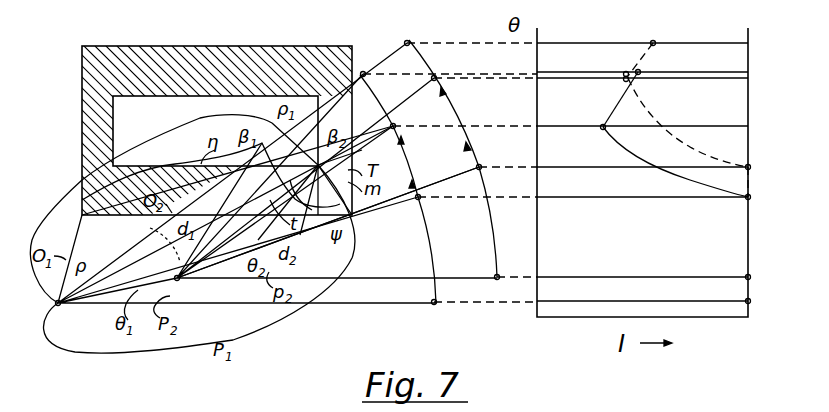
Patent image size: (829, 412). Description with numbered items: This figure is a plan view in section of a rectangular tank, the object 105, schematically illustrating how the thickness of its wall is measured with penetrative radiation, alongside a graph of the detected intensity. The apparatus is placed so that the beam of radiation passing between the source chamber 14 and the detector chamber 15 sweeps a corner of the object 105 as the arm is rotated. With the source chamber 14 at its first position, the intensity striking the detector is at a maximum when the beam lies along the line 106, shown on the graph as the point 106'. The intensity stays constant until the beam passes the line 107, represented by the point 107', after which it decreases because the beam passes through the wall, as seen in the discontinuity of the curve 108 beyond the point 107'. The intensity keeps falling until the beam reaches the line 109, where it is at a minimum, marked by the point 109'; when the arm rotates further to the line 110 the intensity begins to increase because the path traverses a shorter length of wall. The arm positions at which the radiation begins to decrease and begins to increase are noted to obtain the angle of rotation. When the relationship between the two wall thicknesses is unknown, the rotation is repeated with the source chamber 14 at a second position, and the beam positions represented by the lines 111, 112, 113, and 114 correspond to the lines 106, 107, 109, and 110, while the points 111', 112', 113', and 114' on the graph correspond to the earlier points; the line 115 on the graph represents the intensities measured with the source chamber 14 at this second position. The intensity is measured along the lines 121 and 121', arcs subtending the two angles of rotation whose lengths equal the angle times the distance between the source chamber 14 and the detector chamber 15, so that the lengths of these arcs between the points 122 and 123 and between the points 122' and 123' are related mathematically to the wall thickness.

The object 105 is at (86, 129).
The source chamber 14 is at (58, 305).
The line 107 is at (198, 260).
The line 113 is at (390, 100).
The line 121 is at (419, 161).
The detector chamber 15 is at (430, 308).
The line 121' is at (457, 103).
The line 114 is at (388, 32).
The line 110 is at (388, 55).
The point 123' is at (457, 64).
The line 109 is at (415, 115).
The point 123 is at (359, 154).
The line 112 is at (328, 215).
The point 122' is at (503, 157).
The point 122 is at (443, 211).
The line 111 is at (476, 268).
The line 106 is at (408, 316).
The point 114' is at (661, 43).
The point 113' is at (602, 65).
The point 109' is at (601, 101).
The line 115 is at (648, 118).
The curve 108 is at (617, 144).
The point 112' is at (772, 175).
The point 107' is at (772, 195).
The point 111' is at (773, 274).
The point 106' is at (773, 299).